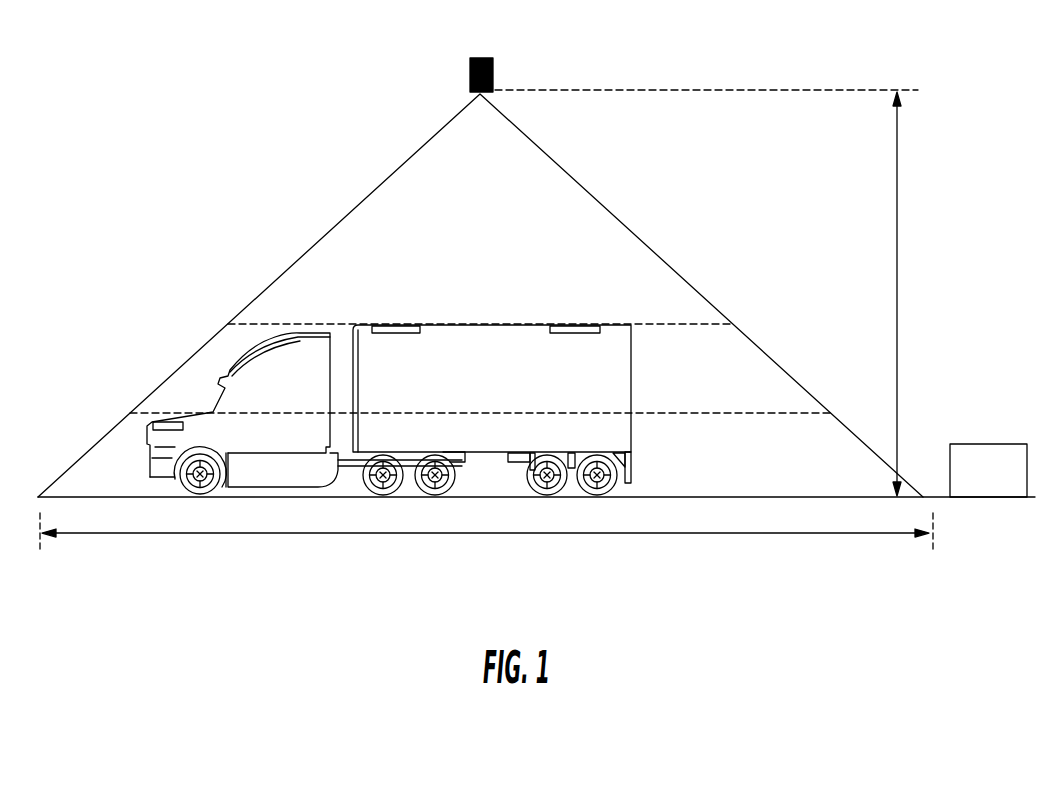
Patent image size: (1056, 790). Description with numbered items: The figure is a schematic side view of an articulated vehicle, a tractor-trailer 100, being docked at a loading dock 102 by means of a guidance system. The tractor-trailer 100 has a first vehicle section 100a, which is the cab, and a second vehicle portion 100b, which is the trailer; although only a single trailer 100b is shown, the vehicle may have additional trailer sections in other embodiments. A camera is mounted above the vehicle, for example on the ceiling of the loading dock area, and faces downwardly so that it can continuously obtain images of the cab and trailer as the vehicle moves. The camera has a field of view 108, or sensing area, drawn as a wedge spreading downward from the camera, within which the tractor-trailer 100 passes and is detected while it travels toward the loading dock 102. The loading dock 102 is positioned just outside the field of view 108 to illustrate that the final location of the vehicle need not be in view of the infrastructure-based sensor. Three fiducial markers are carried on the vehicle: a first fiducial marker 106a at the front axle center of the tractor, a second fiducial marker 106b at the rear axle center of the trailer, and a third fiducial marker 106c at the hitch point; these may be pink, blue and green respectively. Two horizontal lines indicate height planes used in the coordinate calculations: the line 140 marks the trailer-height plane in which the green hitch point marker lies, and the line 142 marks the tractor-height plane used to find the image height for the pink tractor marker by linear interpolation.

The tractor-trailer 100 is at (353, 368).
The first vehicle section 100a is at (253, 352).
The second vehicle portion 100b is at (465, 323).
The loading dock 102 is at (987, 434).
The first fiducial marker 106a is at (167, 422).
The second fiducial marker 106b is at (580, 325).
The third fiducial marker 106c is at (385, 325).
The field of view 108 is at (632, 230).
The trailer-height plane line 140 is at (688, 323).
The tractor-height plane line 142 is at (760, 413).